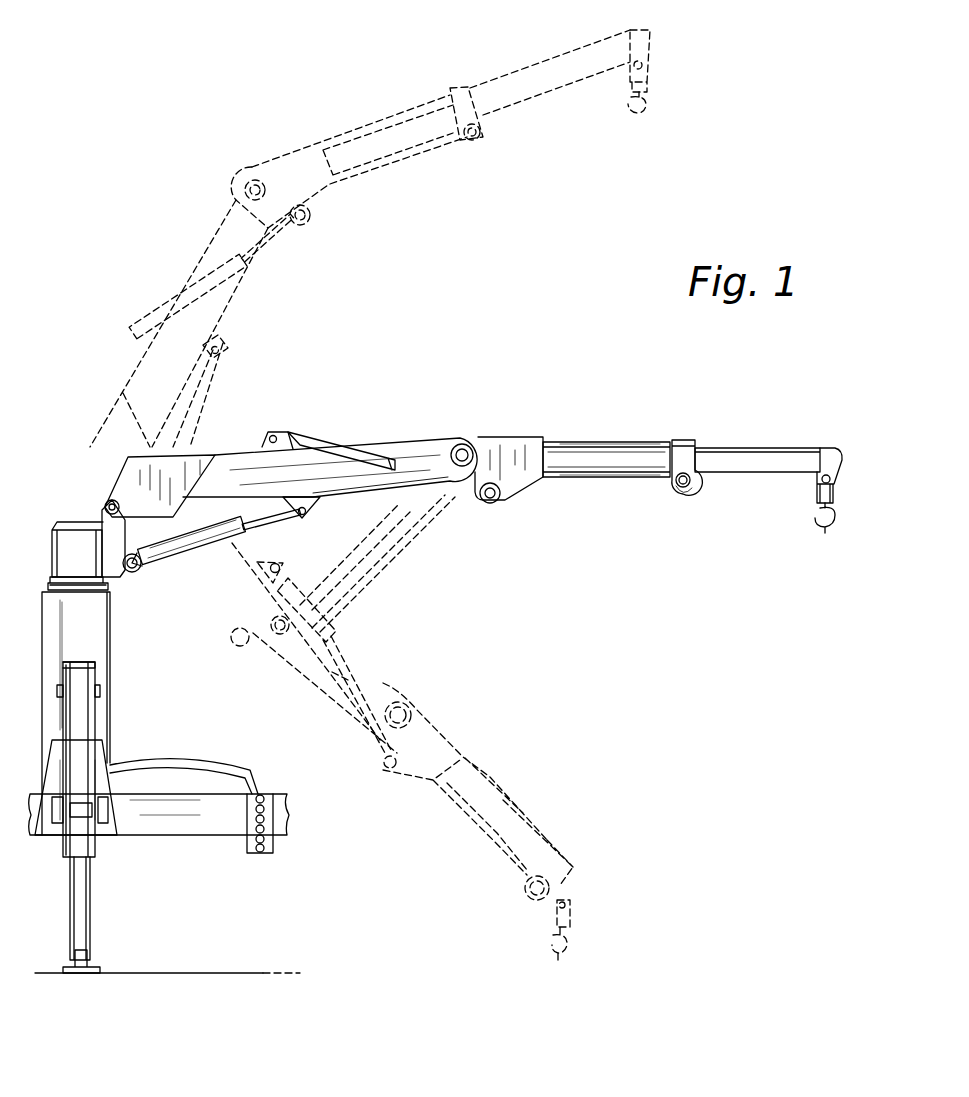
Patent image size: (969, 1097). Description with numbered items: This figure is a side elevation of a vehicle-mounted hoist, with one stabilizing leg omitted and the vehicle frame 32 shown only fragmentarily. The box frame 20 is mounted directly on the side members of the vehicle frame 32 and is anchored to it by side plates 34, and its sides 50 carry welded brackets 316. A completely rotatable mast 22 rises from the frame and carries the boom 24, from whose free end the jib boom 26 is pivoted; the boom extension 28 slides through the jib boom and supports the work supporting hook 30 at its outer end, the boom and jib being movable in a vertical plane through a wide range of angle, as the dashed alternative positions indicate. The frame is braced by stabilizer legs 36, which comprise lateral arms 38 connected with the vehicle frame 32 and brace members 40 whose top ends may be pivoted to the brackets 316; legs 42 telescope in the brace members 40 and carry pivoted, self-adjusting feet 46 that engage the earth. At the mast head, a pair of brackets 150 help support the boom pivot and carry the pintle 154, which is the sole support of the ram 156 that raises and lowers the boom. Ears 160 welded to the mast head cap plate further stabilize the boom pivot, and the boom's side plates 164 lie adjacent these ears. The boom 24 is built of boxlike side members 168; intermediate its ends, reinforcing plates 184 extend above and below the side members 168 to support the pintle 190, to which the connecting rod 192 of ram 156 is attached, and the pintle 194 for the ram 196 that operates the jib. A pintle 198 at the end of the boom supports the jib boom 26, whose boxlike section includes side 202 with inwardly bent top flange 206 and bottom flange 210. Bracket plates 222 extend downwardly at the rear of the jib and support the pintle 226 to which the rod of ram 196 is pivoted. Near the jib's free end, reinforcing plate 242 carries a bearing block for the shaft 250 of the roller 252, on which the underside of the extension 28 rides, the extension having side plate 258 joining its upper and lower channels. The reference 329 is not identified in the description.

The box frame 20 is at (93, 637).
The mast 22 is at (72, 540).
The boom 24 is at (212, 218).
The jib boom 26 is at (595, 455).
The boom extension 28 is at (757, 455).
The work supporting hook 30 is at (820, 532).
The vehicle frame 32 is at (190, 814).
The side plates 34 is at (100, 750).
The stabilizer legs 36 is at (65, 890).
The lateral arms 38 is at (100, 830).
The brace members 40 is at (80, 718).
The legs 42 is at (90, 914).
The feet 46 is at (96, 968).
The sides of frame 50 is at (97, 668).
The brackets 150 is at (100, 592).
The pintle 154 is at (130, 572).
The ram 156 is at (190, 552).
The ears 160 is at (98, 503).
The side plates 164 is at (198, 452).
The side members 168 is at (400, 448).
The reinforcing plates 184 is at (268, 438).
The pintle 190 is at (310, 514).
The connecting rod 192 is at (270, 527).
The pintle 194 is at (276, 433).
The ram 196 is at (326, 440).
The pintle 198 is at (462, 447).
The side 202 is at (645, 455).
The top flange 206 is at (620, 440).
The bottom flange 210 is at (598, 478).
The bracket plates 222 is at (508, 493).
The pintle 226 is at (495, 502).
The reinforcing plate 242 is at (676, 478).
The shaft 250 is at (690, 485).
The roller 252 is at (688, 500).
The side plate 258 is at (795, 455).
The brackets 316 is at (100, 682).
The ground surface 329 is at (222, 975).